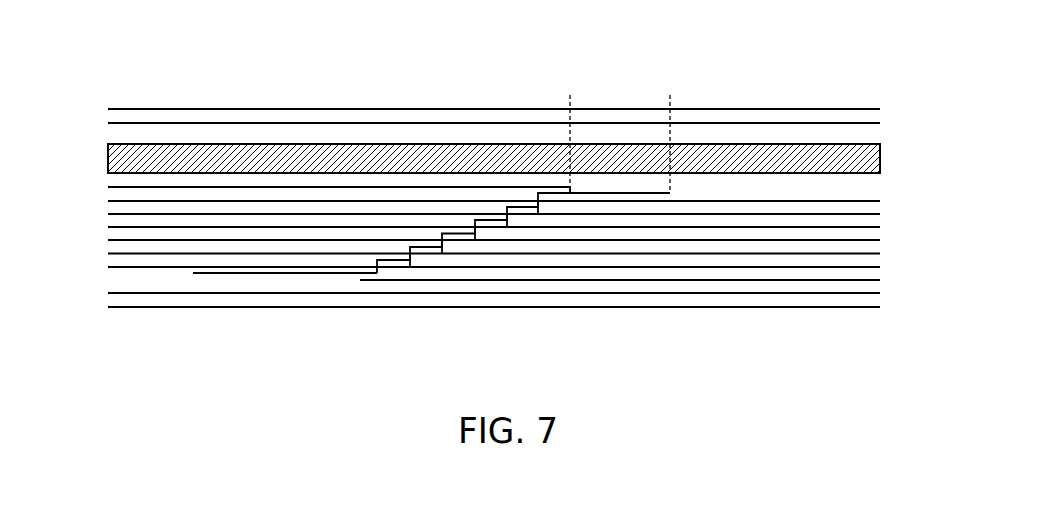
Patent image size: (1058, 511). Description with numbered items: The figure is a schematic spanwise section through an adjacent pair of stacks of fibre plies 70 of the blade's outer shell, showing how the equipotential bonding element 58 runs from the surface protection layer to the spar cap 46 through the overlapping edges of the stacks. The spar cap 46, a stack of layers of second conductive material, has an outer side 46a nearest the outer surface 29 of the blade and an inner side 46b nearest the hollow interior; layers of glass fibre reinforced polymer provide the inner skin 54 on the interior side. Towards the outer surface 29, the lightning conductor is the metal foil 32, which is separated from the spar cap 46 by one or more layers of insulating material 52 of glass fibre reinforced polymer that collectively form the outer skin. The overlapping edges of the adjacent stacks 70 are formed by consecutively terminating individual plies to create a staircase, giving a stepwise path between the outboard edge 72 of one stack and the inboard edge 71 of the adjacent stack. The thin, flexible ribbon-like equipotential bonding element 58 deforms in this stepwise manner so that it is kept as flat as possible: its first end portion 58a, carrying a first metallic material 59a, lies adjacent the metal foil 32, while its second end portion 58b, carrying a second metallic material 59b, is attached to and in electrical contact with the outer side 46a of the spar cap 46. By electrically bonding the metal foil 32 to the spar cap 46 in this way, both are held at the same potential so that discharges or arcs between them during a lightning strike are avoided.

The outer surface of the blade 29 is at (616, 327).
The metal foil 32 is at (698, 295).
The spar cap 46 is at (117, 159).
The outer side of the spar cap 46a is at (868, 179).
The inner side of the spar cap 46b is at (868, 141).
The layers of insulating material 52 is at (845, 309).
The inner skin 54 is at (900, 131).
The equipotential bonding element 58 is at (428, 262).
The first end portion 58a is at (236, 274).
The second end portion 58b is at (626, 192).
The first metallic material 59a is at (270, 274).
The second metallic material 59b is at (638, 192).
The stacks of fibre plies 70 is at (105, 193).
The inboard edge 71 is at (384, 232).
The outboard edge 72 is at (488, 252).